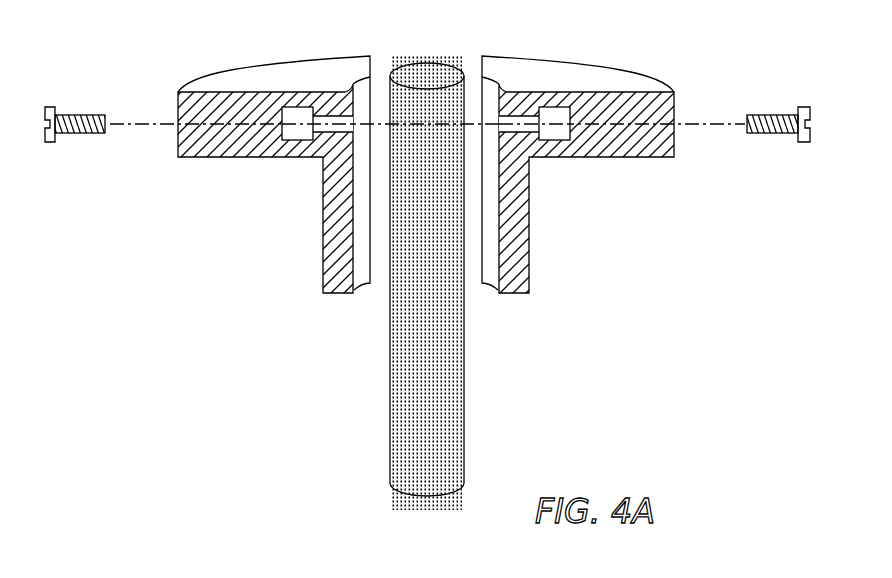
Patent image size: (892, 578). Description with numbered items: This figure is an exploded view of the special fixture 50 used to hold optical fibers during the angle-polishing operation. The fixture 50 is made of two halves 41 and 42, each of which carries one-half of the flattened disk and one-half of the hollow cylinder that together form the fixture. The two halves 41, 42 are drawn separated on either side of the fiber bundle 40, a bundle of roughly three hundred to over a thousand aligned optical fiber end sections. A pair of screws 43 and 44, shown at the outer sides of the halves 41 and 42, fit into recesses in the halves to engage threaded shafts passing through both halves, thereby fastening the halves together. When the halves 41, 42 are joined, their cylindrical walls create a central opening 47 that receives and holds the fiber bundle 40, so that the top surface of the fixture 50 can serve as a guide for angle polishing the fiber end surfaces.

The fiber bundle 40 is at (463, 360).
The fixture half 41 is at (283, 73).
The fixture half 42 is at (622, 80).
The screw 43 is at (82, 114).
The screw 44 is at (775, 113).
The central opening 47 is at (370, 80).
The fixture 50 is at (292, 208).